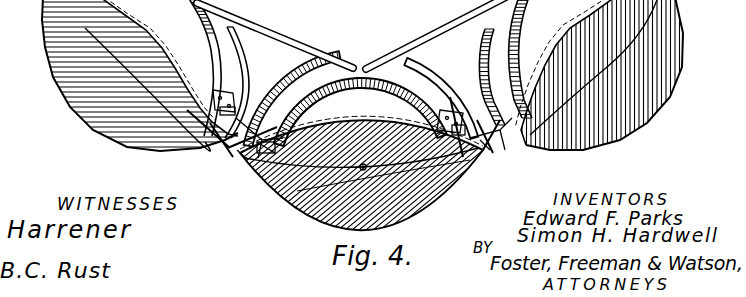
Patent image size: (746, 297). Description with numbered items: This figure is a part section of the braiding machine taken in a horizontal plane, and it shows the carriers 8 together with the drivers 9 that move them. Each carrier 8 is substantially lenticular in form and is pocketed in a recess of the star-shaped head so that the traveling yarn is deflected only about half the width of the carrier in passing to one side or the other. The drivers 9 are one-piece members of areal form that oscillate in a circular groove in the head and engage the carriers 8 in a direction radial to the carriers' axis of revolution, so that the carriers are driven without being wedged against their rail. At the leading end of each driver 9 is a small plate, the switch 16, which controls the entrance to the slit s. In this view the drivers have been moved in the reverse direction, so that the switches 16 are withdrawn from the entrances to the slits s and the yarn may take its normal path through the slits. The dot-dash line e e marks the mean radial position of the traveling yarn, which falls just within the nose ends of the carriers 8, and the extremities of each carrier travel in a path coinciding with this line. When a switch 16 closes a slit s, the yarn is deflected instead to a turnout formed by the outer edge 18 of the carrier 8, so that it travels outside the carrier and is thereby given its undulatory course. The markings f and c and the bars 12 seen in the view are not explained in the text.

The carrier 8 is at (123, 141).
The driver 9 is at (231, 57).
The frame bar 12 is at (268, 30).
The switch 16 is at (249, 113).
The outer edge of carrier 18 is at (68, 98).
The pivot f is at (297, 191).
The slit s is at (237, 160).
The mean radial position line e is at (485, 148).
The junction c is at (359, 4).